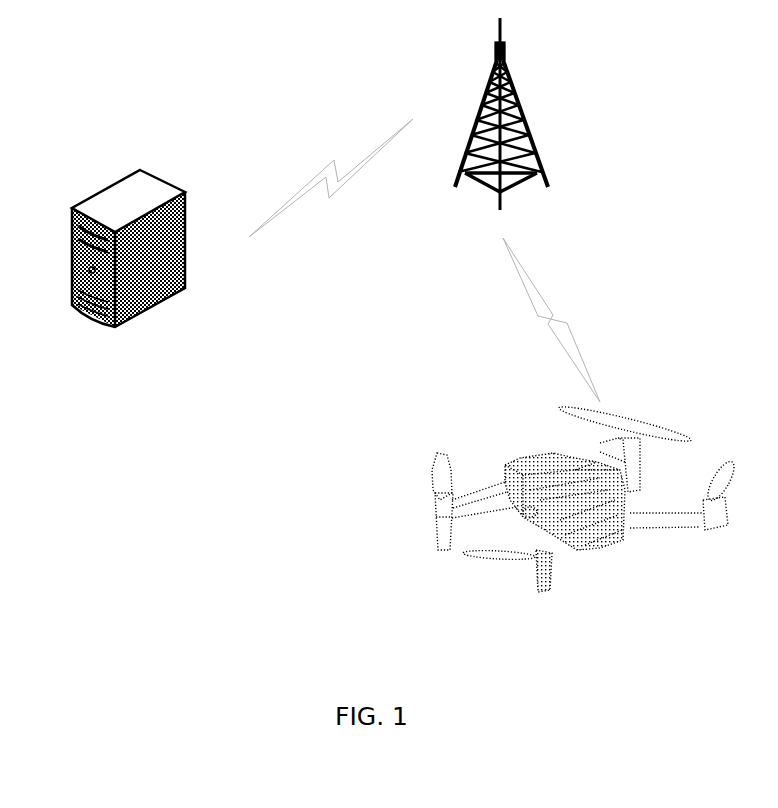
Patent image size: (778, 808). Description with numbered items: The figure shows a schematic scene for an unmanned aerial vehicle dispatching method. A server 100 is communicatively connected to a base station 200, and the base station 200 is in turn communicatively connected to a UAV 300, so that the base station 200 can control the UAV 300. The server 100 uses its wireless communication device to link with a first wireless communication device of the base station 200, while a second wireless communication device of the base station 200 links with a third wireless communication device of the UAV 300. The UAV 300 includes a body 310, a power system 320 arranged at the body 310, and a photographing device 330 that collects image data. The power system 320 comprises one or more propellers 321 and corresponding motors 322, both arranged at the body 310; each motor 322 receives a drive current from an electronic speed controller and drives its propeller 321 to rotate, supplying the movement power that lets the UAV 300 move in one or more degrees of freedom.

The server 100 is at (80, 190).
The base station 200 is at (479, 43).
The unmanned aerial vehicle 300 is at (465, 437).
The body 310 is at (550, 452).
The power system 320 is at (329, 468).
The propeller 321 is at (436, 467).
The motor 322 is at (438, 498).
The photographing device 330 is at (516, 512).